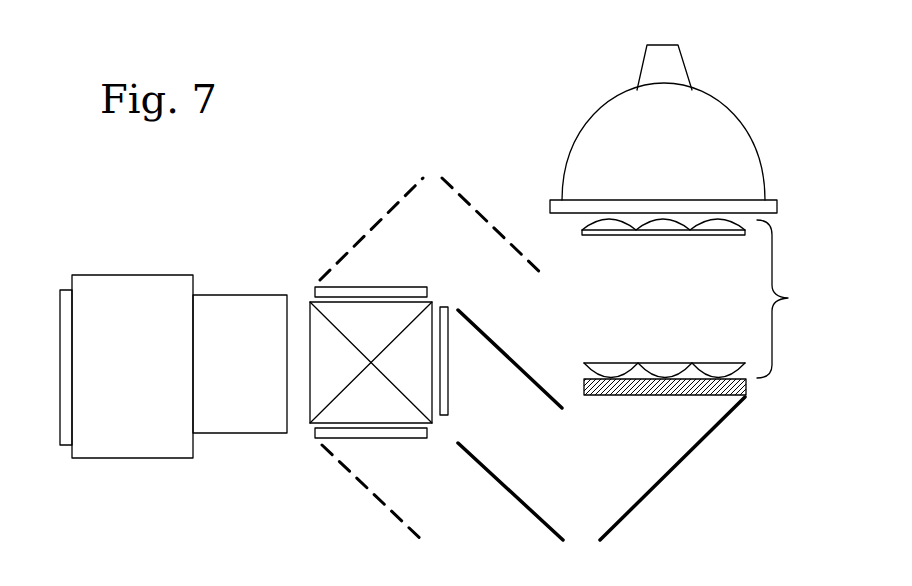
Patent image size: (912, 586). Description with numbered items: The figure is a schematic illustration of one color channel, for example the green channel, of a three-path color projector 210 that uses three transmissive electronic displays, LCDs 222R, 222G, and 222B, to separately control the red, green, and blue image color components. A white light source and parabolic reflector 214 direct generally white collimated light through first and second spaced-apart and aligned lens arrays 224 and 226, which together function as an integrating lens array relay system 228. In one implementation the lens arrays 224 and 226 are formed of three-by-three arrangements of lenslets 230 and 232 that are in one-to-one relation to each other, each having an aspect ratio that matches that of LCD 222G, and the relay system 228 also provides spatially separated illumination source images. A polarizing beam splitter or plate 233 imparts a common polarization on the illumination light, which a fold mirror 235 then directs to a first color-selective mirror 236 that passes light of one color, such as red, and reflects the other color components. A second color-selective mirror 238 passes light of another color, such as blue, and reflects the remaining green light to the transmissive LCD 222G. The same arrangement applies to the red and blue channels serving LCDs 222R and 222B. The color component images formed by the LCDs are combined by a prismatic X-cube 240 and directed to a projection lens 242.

The three-path color projector 210 is at (308, 186).
The white light source and parabolic reflector 214 is at (748, 140).
The first lens array 224 is at (661, 257).
The second lens array 226 is at (668, 338).
The integrating lens array relay system 228 is at (797, 299).
The lenslets 230 is at (652, 231).
The lenslets 232 is at (720, 367).
The polarizing beam splitter or plate 233 is at (746, 388).
The fold mirror 235 is at (697, 447).
The first color-selective mirror 236 is at (515, 493).
The second color-selective mirror 238 is at (515, 362).
The LCD 222B is at (385, 287).
The LCD 222G is at (450, 352).
The LCD 222R is at (358, 440).
The prismatic X-cube 240 is at (358, 370).
The projection lens 242 is at (209, 466).